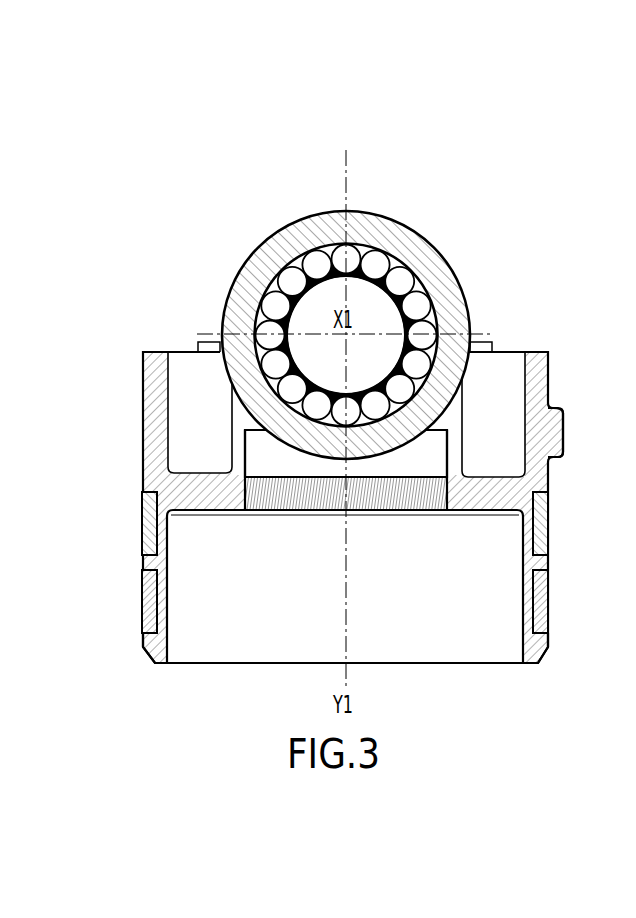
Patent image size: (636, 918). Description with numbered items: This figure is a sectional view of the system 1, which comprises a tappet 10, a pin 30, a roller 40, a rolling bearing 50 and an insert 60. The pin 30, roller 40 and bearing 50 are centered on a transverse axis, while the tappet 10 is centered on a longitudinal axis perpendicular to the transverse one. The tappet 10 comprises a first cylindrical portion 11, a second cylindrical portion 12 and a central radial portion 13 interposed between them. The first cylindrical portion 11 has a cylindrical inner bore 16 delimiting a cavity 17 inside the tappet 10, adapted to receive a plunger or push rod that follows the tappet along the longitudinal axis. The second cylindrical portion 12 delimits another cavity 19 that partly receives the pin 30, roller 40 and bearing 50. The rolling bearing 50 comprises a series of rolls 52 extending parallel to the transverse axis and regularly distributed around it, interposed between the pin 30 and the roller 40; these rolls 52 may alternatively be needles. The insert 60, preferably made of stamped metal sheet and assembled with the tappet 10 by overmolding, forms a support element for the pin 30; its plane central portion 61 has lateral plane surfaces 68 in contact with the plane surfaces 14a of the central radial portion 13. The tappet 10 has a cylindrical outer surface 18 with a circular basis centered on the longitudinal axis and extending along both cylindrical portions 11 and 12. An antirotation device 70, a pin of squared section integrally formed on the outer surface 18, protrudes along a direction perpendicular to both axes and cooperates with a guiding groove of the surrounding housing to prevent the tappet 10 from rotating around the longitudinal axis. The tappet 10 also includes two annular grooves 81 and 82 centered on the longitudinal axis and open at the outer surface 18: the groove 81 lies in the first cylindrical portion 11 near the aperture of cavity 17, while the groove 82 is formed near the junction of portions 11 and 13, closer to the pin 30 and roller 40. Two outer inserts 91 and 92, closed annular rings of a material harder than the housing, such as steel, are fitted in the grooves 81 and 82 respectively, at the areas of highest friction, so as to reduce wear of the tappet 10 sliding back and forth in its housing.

The system 1 is at (319, 306).
The tappet 10 is at (323, 531).
The first cylindrical portion 11 is at (545, 643).
The second cylindrical portion 12 is at (540, 378).
The central radial portion 13 is at (493, 500).
The plane surfaces 14a is at (445, 493).
The cylindrical inner bore 16 is at (168, 643).
The cavity 17 is at (285, 608).
The cylindrical outer surface 18 is at (142, 408).
The cavity 19 is at (495, 400).
The pin 30 is at (318, 312).
The roller 40 is at (318, 222).
The rolling bearing 50 is at (383, 245).
The rolls 52 is at (413, 267).
The insert 60 is at (345, 621).
The plane central portion 61 is at (318, 498).
The lateral plane surfaces 68 is at (242, 493).
The antirotation device 70 is at (550, 445).
The annular groove 81 is at (145, 598).
The annular groove 82 is at (145, 528).
The outer insert 91 is at (543, 597).
The outer insert 92 is at (543, 520).